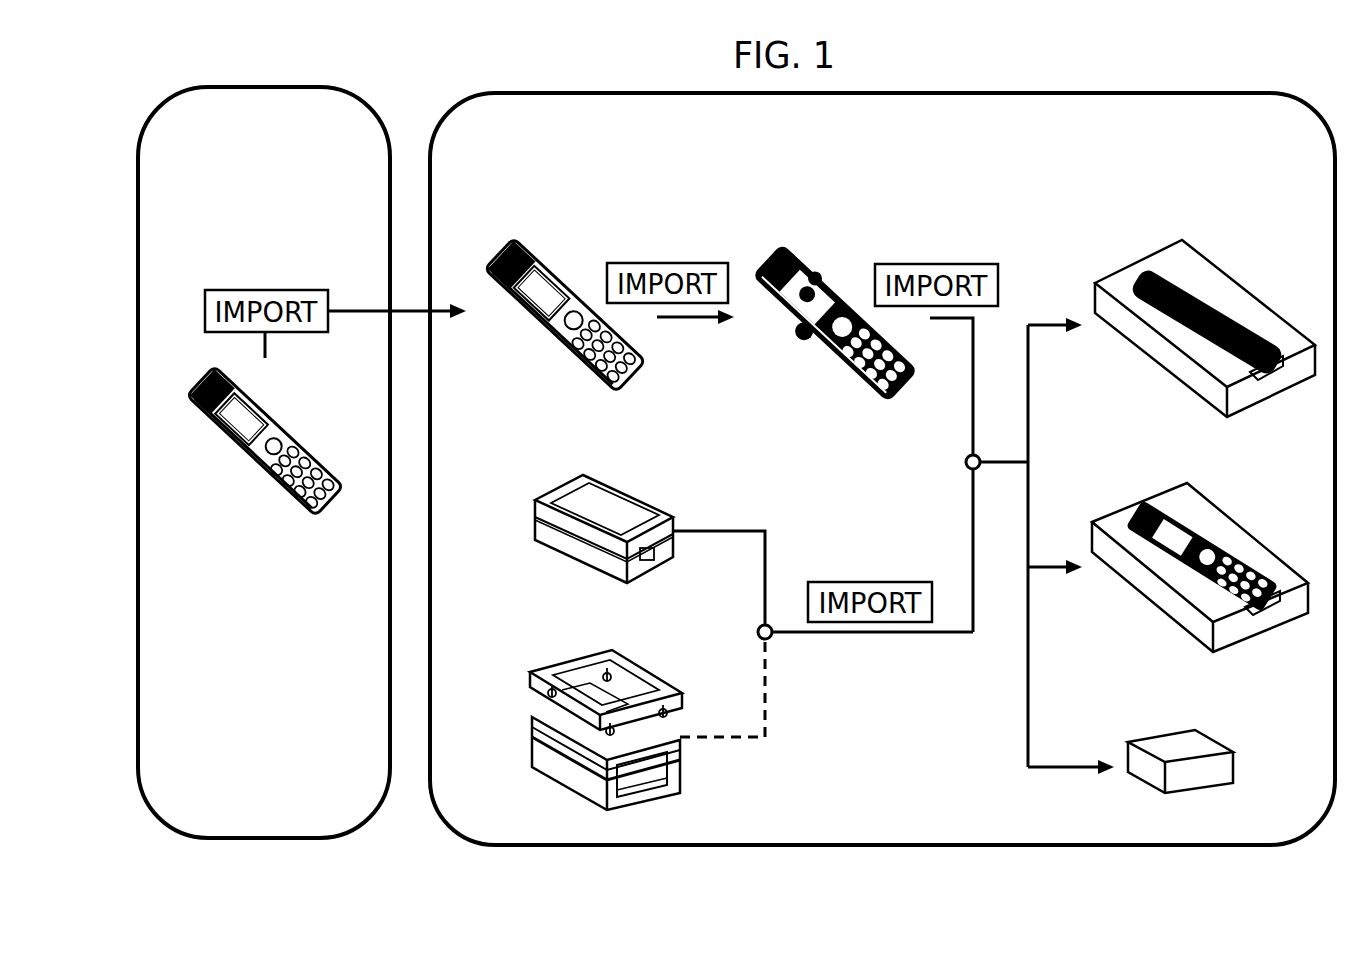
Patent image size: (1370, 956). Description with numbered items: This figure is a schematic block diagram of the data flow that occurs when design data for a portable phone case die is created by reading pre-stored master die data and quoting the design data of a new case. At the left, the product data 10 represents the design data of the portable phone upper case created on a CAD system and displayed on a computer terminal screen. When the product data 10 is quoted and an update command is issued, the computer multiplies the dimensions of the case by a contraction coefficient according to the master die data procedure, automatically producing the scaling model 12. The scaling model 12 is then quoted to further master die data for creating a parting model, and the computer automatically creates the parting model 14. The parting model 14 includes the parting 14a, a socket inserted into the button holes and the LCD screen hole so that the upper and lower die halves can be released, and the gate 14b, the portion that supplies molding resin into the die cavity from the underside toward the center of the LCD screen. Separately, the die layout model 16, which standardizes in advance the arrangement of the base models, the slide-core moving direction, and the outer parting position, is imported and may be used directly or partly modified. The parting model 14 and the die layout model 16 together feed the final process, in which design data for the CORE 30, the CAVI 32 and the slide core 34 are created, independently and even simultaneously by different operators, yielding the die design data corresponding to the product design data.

The product data 10 is at (228, 442).
The scaling model 12 is at (522, 313).
The parting model 14 is at (820, 315).
The parting 14a is at (820, 272).
The gate 14b is at (773, 310).
The die layout model 16 is at (558, 548).
The CORE 30 is at (1215, 266).
The CAVI 32 is at (1210, 500).
The slide core 34 is at (1212, 733).